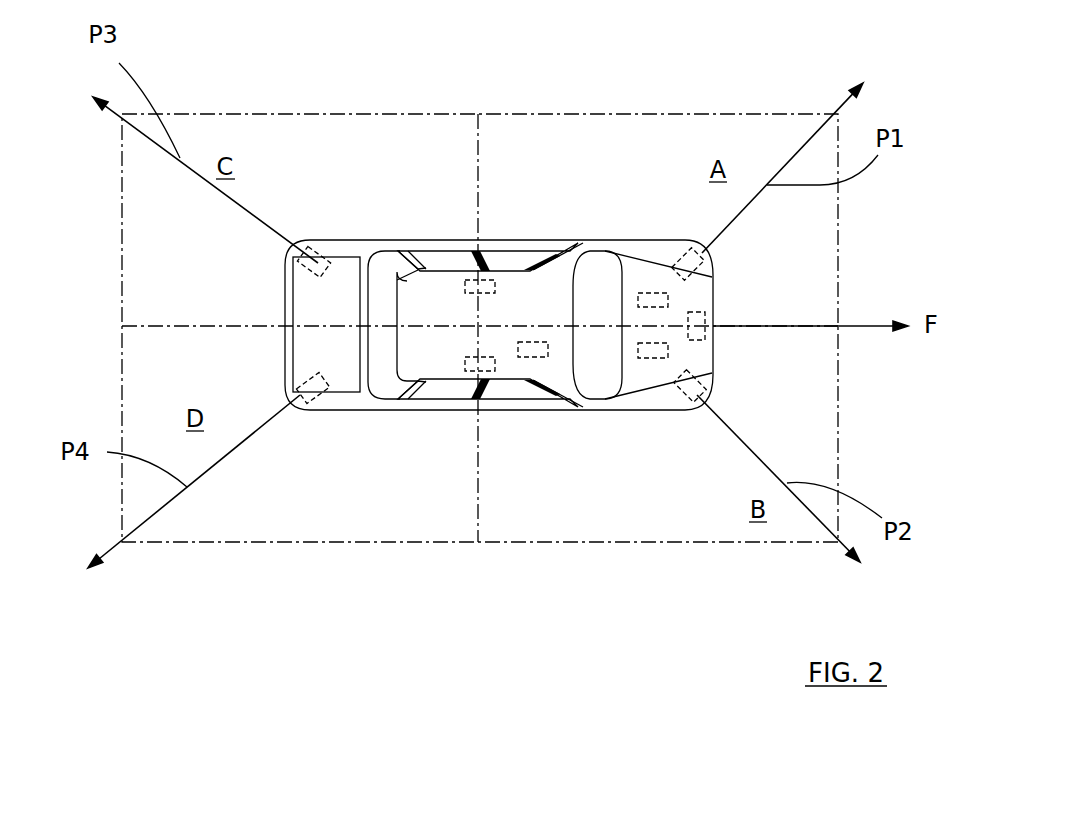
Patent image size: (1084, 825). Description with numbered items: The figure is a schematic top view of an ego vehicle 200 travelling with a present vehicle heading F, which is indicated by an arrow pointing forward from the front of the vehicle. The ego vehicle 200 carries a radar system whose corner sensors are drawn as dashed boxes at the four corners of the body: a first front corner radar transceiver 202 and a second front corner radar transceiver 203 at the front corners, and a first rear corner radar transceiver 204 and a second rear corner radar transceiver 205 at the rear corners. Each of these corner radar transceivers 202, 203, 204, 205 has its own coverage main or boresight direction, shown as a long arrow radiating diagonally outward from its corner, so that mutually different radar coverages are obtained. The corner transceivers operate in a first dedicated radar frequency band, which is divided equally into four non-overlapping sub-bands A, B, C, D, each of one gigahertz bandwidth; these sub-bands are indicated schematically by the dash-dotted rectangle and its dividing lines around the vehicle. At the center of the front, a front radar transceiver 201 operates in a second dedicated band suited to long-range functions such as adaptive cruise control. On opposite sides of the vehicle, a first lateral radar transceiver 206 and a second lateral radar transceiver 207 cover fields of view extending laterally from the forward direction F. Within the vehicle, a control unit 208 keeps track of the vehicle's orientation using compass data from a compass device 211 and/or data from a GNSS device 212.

The ego vehicle 200 is at (555, 290).
The front radar transceiver 201 is at (710, 345).
The first front corner radar transceiver 202 is at (700, 262).
The second front corner radar transceiver 203 is at (693, 393).
The first rear corner radar transceiver 204 is at (320, 250).
The second rear corner radar transceiver 205 is at (305, 400).
The first lateral radar transceiver 206 is at (478, 278).
The second lateral radar transceiver 207 is at (478, 372).
The control unit 208 is at (533, 358).
The compass device 211 is at (652, 292).
The GNSS device 212 is at (655, 360).